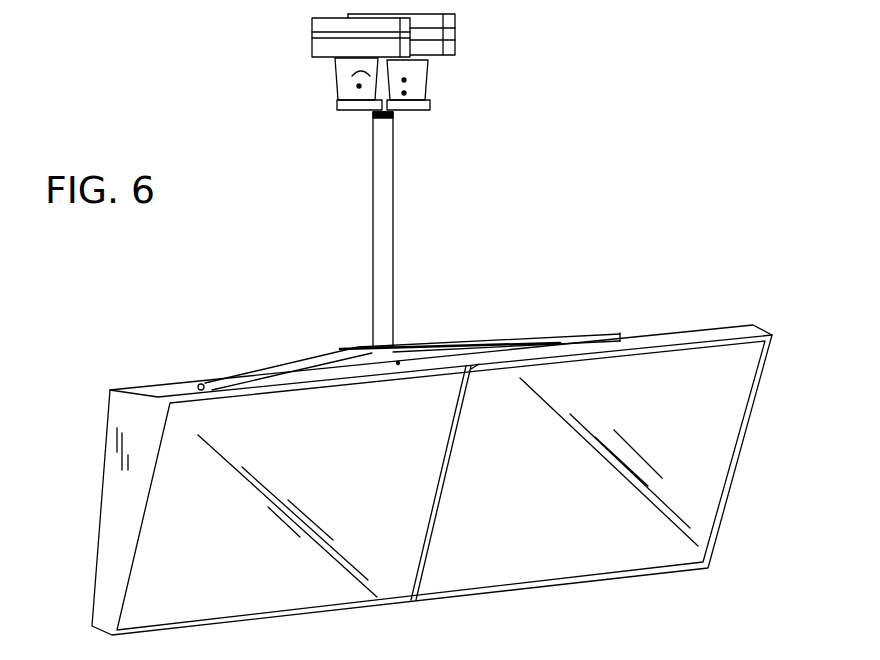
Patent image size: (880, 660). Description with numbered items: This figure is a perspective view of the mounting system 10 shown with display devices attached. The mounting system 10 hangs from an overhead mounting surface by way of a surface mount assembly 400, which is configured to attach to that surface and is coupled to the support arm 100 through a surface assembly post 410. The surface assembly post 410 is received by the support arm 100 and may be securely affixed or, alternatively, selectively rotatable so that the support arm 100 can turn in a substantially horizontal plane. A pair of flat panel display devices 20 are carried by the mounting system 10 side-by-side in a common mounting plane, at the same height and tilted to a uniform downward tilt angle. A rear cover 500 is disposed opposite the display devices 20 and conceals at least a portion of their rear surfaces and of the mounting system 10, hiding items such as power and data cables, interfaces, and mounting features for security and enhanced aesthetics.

The mounting system 10 is at (290, 218).
The surface mount assembly 400 is at (474, 46).
The surface assembly post 410 is at (383, 224).
The support arm 100 is at (446, 351).
The display device 20 is at (446, 582).
The rear cover 500 is at (120, 417).